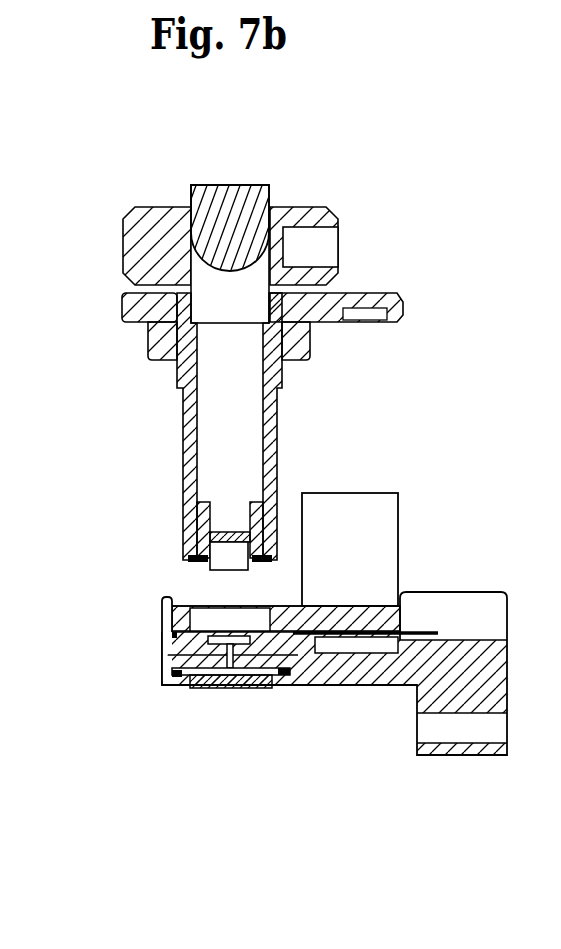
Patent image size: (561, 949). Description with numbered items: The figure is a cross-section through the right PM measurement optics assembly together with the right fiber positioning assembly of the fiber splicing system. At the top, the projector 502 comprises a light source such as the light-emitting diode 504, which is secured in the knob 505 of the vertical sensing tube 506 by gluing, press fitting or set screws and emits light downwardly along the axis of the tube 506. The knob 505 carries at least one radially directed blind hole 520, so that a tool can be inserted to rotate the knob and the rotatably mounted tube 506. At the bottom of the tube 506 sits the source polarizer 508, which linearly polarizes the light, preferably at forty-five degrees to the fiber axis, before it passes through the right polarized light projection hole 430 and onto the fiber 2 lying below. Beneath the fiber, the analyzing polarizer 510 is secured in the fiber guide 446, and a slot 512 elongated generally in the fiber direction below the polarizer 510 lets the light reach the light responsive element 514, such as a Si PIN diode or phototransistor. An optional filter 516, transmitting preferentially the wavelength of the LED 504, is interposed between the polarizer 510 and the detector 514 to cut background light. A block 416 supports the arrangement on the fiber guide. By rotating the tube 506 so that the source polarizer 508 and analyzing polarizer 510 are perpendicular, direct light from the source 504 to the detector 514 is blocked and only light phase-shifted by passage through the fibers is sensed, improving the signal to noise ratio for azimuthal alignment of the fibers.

The fiber 2 is at (350, 630).
The block 416 is at (297, 598).
The right polarized light projection hole 430 is at (213, 617).
The fiber guide 446 is at (325, 673).
The projector 502 is at (105, 558).
The light-emitting diode 504 is at (258, 185).
The knob 505 is at (284, 207).
The vertical sensing tube 506 is at (182, 427).
The source polarizer 508 is at (210, 535).
The analyzing polarizer 510 is at (239, 637).
The slot 512 is at (162, 655).
The light responsive element 514 is at (215, 687).
The filter 516 is at (270, 687).
The radially directed blind hole 520 is at (307, 244).